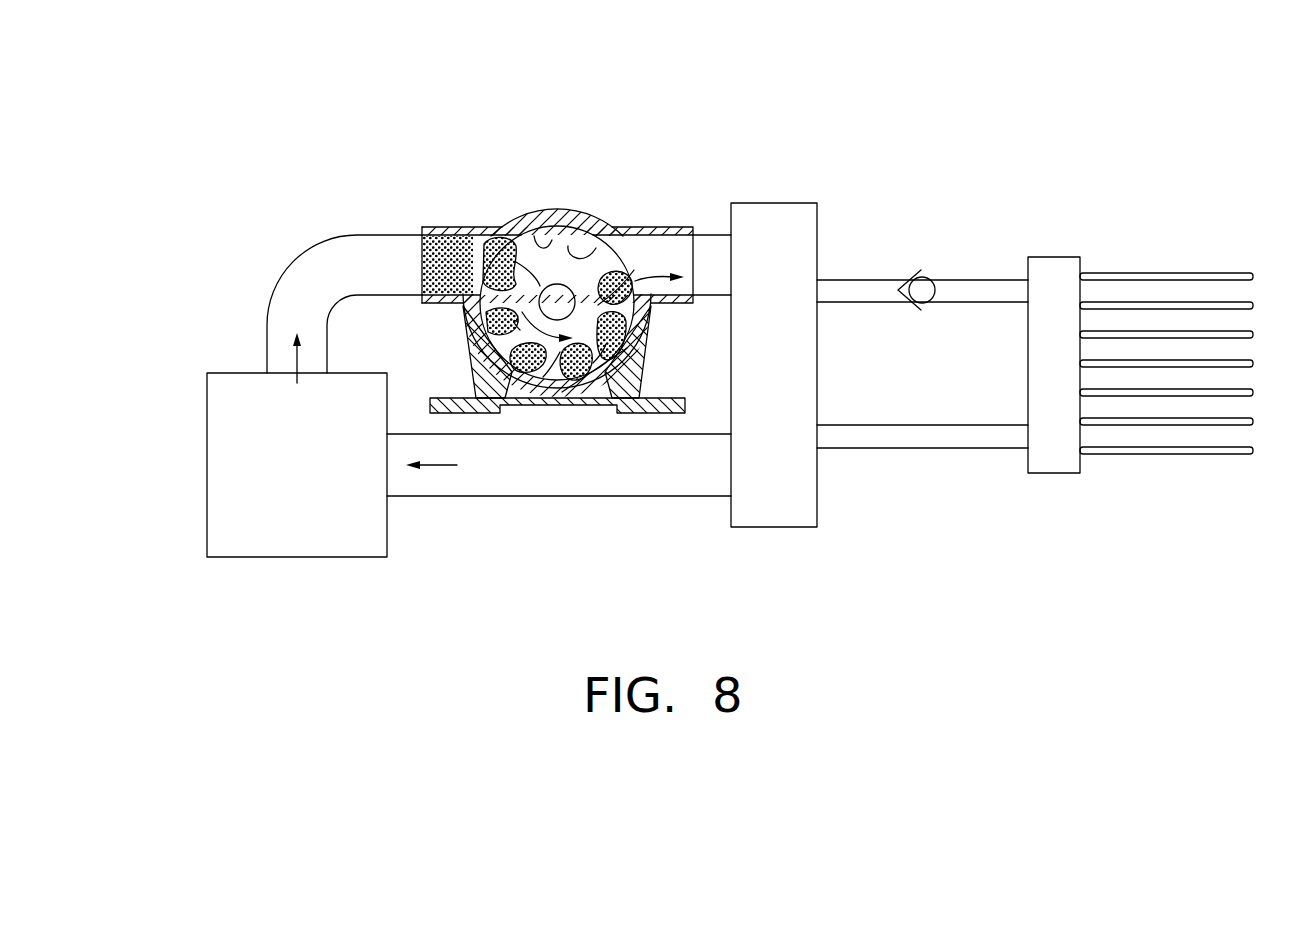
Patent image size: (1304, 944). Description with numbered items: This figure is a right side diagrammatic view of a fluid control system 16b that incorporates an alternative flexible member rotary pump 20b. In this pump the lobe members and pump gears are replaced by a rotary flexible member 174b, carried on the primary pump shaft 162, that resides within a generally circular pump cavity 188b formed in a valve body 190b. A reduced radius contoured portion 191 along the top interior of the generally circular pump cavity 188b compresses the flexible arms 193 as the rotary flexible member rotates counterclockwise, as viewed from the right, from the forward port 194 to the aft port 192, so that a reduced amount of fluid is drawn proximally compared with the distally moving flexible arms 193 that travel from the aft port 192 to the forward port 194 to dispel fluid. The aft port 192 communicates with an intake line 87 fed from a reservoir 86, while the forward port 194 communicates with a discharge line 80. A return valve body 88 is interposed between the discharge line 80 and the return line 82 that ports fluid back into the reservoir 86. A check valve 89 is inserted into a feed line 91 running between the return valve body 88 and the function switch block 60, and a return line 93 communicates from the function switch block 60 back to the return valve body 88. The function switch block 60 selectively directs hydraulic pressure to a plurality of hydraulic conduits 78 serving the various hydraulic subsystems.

The fluid control system 16b is at (682, 90).
The valve body 190b is at (550, 207).
The reduced radius contoured portion 191 is at (542, 235).
The rotary flexible member 174b is at (538, 278).
The flexible member rotary pump 20b is at (609, 217).
The forward port 194 is at (705, 235).
The aft port 192 is at (447, 248).
The generally circular pump cavity 188b is at (480, 338).
The primary pump shaft 162 is at (560, 305).
The flexible arms 193 is at (593, 363).
The discharge line 80 is at (743, 235).
The return valve body 88 is at (803, 203).
The intake line 87 is at (320, 243).
The reservoir 86 is at (355, 557).
The return line 82 is at (570, 496).
The check valve 89 is at (932, 260).
The feed line 91 is at (951, 280).
The return line 93 is at (914, 449).
The function switch block 60 is at (1050, 257).
The hydraulic conduits 78 is at (1162, 475).